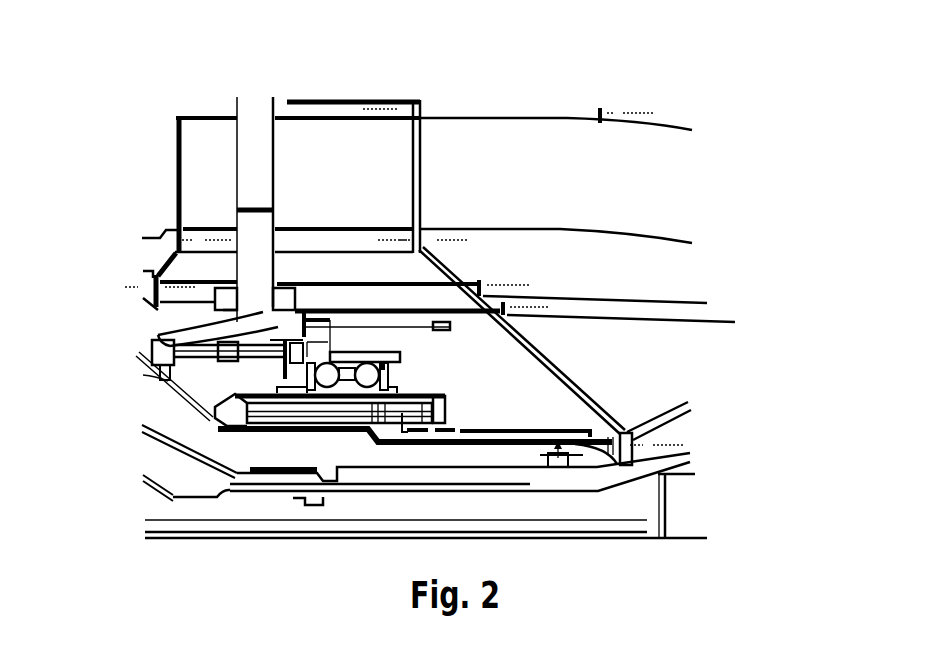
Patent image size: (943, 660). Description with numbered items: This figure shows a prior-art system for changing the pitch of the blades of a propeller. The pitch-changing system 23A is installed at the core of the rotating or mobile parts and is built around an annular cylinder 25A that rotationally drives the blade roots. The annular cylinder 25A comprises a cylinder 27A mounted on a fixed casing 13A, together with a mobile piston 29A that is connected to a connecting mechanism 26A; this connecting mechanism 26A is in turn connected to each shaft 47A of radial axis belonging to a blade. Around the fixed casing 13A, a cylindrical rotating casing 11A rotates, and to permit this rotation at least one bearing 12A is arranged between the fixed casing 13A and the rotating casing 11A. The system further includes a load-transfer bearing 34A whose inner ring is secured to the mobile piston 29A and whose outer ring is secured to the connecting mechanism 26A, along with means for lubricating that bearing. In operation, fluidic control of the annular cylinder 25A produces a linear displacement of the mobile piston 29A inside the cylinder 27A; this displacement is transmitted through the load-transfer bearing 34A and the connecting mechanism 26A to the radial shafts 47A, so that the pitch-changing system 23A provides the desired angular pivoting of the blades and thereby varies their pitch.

The shaft of radial axis 47A is at (263, 172).
The load-transfer bearing 34A is at (381, 363).
The connecting mechanism 26A is at (187, 330).
The annular cylinder 25A is at (447, 391).
The cylinder 27A is at (497, 430).
The bearing 12A is at (563, 432).
The cylindrical rotating casing 11A is at (668, 430).
The pitch-changing system 23A is at (212, 390).
The mobile piston 29A is at (212, 408).
The fixed casing 13A is at (259, 422).